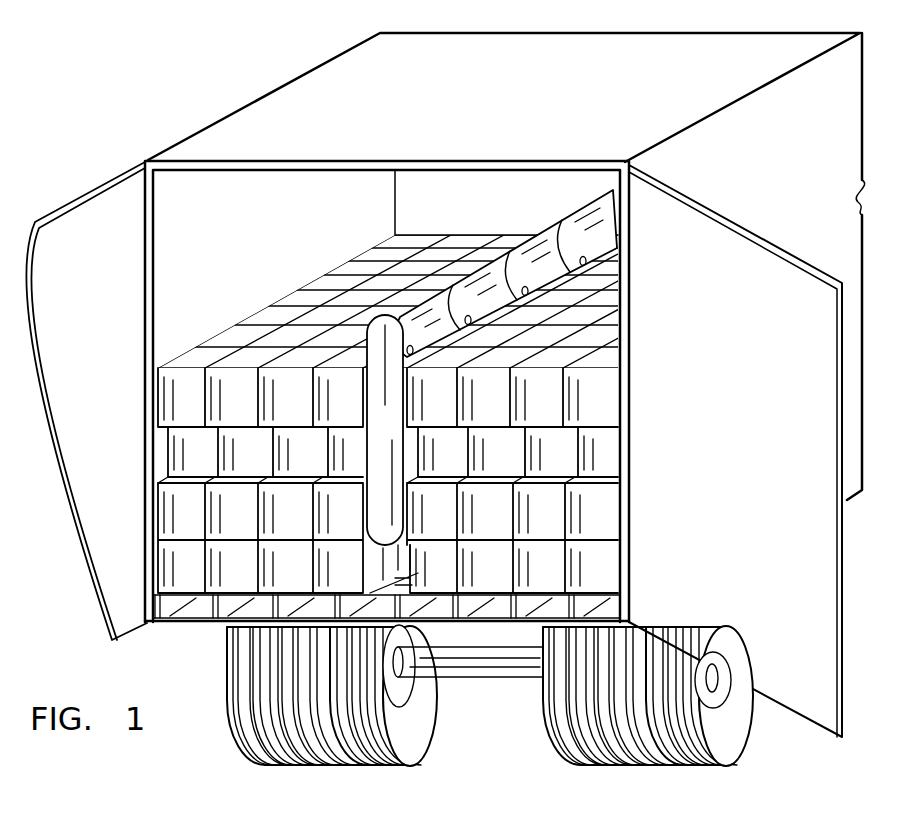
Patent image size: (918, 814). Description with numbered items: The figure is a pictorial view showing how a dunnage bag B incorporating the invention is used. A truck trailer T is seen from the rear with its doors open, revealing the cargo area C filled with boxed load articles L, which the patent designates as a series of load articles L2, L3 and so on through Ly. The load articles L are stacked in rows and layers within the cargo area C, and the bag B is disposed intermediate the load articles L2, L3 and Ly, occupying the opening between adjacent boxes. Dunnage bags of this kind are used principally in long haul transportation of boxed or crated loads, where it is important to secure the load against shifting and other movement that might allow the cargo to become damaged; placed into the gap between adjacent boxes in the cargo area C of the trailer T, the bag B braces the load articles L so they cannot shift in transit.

The truck trailer T is at (283, 130).
The cargo area C is at (560, 142).
The bag B is at (390, 318).
The load articles L is at (343, 413).
The load article L2 is at (355, 445).
The load article L3 is at (437, 395).
The load article Ly is at (185, 500).